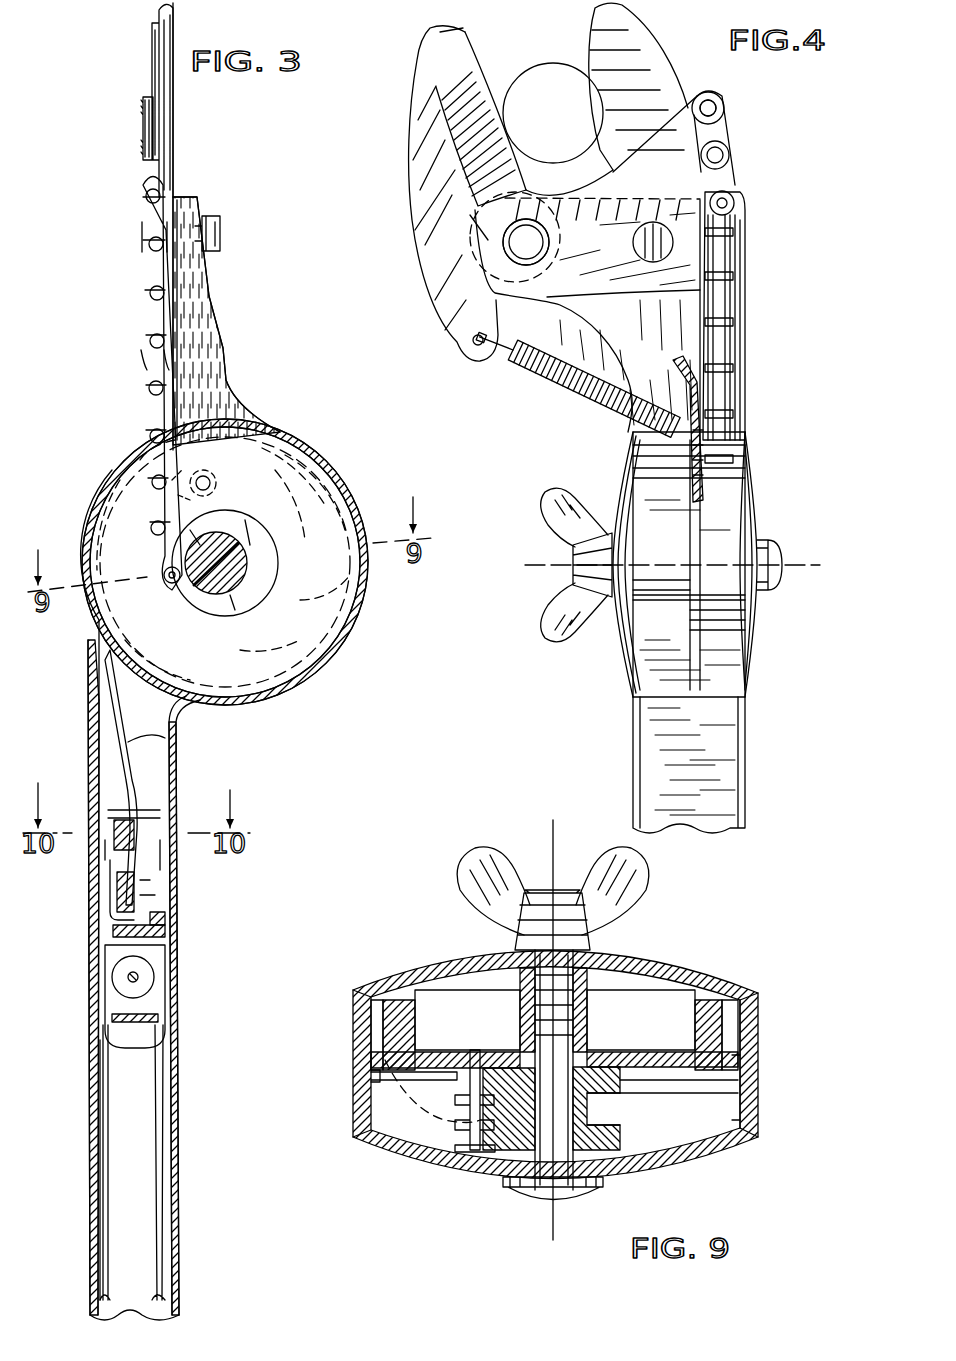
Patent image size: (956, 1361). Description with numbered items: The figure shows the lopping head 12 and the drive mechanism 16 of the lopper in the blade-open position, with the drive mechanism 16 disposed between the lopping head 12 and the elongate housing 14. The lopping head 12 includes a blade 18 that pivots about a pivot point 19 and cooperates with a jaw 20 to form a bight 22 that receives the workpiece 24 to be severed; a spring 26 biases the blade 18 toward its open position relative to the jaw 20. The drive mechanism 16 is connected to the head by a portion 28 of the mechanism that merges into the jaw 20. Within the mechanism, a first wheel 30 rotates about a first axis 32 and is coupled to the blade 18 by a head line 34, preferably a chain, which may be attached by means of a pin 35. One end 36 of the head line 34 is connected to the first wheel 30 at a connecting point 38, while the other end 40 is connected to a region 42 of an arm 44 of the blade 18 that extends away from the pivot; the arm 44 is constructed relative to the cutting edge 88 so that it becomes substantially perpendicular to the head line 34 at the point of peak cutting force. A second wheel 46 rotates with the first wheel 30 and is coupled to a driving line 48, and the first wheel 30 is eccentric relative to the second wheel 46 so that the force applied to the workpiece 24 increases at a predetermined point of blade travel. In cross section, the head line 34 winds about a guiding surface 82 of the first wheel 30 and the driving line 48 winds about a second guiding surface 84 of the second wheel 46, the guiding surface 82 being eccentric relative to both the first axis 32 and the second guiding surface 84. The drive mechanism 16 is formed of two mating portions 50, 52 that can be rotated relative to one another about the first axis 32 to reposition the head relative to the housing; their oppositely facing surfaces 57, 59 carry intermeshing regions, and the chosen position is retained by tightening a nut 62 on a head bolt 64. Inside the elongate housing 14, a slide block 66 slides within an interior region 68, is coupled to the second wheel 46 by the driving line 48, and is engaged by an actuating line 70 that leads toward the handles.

In FIG. 4, the lopping head 12 is at (414, 238).
In FIG. 3, the elongate housing 14 is at (178, 1183).
In FIG. 4, the elongate housing 14 is at (689, 765).
In FIG. 3, the drive mechanism 16 is at (300, 446).
In FIG. 4, the drive mechanism 16 is at (602, 470).
In FIG. 9, the drive mechanism 16 is at (438, 950).
In FIG. 4, the blade 18 is at (428, 186).
In FIG. 3, the pivot point 19 is at (234, 220).
In FIG. 4, the pivot point 19 is at (508, 258).
In FIG. 4, the jaw 20 is at (646, 30).
In FIG. 4, the bight 22 is at (521, 53).
In FIG. 4, the workpiece 24 is at (537, 120).
In FIG. 4, the spring 26 is at (560, 385).
In FIG. 3, the portion of drive mechanism 28 is at (207, 375).
In FIG. 4, the portion of drive mechanism 28 is at (652, 343).
In FIG. 3, the first wheel 30 is at (282, 655).
In FIG. 9, the first wheel 30 is at (606, 1150).
In FIG. 3, the first axis 32 is at (243, 548).
In FIG. 4, the first axis 32 is at (812, 566).
In FIG. 9, the first axis 32 is at (552, 868).
In FIG. 3, the head line 34 is at (150, 328).
In FIG. 4, the head line 34 is at (738, 196).
In FIG. 9, the head line 34 is at (458, 1130).
In FIG. 9, the pin 35 is at (474, 1060).
In FIG. 3, the one end of head line 36 is at (162, 566).
In FIG. 3, the connecting point 38 is at (188, 590).
In FIG. 4, the other end of head line 40 is at (727, 140).
In FIG. 4, the region of arm 42 is at (712, 92).
In FIG. 4, the arm 44 is at (594, 245).
In FIG. 3, the second wheel 46 is at (300, 648).
In FIG. 9, the second wheel 46 is at (702, 990).
In FIG. 3, the driving line 48 is at (172, 748).
In FIG. 4, the mating portion 50 is at (618, 635).
In FIG. 9, the mating portion 50 is at (755, 1010).
In FIG. 4, the mating portion 52 is at (748, 635).
In FIG. 9, the mating portion 52 is at (752, 1115).
In FIG. 9, the facing surface 57 is at (362, 1076).
In FIG. 9, the facing surface 59 is at (760, 1062).
In FIG. 9, the nut 62 is at (465, 870).
In FIG. 9, the head bolt 64 is at (540, 1188).
In FIG. 3, the slide block 66 is at (168, 890).
In FIG. 3, the interior region 68 is at (138, 1096).
In FIG. 3, the actuating line 70 is at (100, 1058).
In FIG. 9, the guiding surface 82 is at (598, 1110).
In FIG. 9, the second guiding surface 84 is at (705, 1035).
In FIG. 4, the cutting edge 88 is at (474, 54).